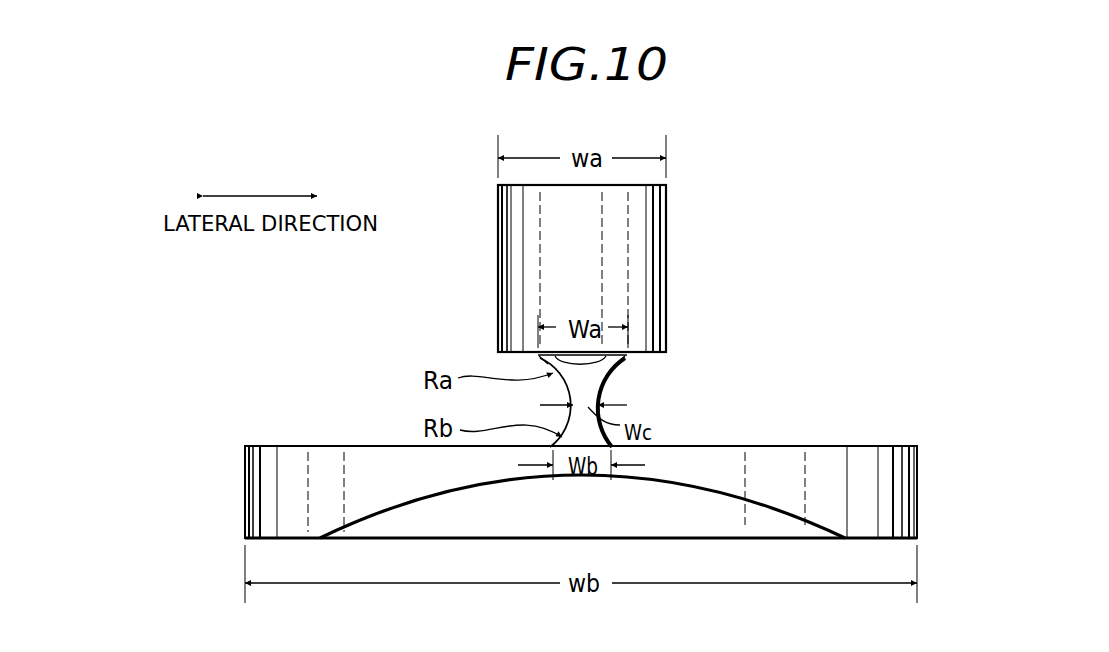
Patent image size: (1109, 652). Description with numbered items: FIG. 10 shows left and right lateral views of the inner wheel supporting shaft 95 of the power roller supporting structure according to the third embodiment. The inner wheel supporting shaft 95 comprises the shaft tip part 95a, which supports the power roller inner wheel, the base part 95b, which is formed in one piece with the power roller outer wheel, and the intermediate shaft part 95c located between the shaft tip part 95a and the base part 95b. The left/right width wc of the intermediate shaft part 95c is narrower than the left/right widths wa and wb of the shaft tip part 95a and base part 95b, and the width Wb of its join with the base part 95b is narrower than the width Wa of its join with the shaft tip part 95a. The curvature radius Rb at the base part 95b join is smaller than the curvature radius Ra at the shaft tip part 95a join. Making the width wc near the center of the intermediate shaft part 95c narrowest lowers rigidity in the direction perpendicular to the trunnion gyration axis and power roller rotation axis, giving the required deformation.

The inner wheel supporting shaft 95 is at (460, 220).
The shaft tip part 95a is at (666, 233).
The base part 95b is at (900, 490).
The intermediate shaft part 95c is at (600, 392).